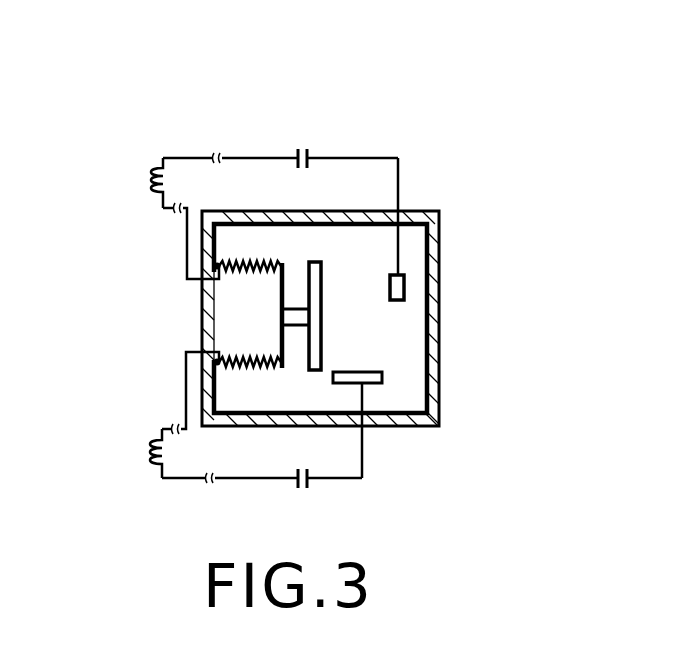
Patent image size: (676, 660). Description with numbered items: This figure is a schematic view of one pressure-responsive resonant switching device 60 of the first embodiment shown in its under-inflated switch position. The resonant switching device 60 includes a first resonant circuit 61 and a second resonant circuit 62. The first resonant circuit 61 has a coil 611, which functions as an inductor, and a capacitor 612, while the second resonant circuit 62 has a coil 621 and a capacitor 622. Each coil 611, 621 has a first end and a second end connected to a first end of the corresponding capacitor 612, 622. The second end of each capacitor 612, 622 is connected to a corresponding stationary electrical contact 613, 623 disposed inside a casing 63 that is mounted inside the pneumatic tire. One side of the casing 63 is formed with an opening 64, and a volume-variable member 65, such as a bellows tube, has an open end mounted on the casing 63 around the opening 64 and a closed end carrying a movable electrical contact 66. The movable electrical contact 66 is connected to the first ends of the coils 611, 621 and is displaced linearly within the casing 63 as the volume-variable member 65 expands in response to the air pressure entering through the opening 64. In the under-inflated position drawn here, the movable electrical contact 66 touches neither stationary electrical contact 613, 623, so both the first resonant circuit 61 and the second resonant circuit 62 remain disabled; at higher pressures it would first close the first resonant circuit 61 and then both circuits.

The resonant switching device 60 is at (452, 170).
The first resonant circuit 61 is at (214, 447).
The coil 611 is at (150, 455).
The capacitor 612 is at (302, 490).
The stationary electrical contact 613 is at (382, 380).
The second resonant circuit 62 is at (230, 171).
The coil 621 is at (152, 168).
The capacitor 622 is at (302, 148).
The stationary electrical contact 623 is at (404, 287).
The casing 63 is at (441, 250).
The opening 64 is at (227, 312).
The volume-variable member 65 is at (250, 255).
The movable electrical contact 66 is at (315, 262).